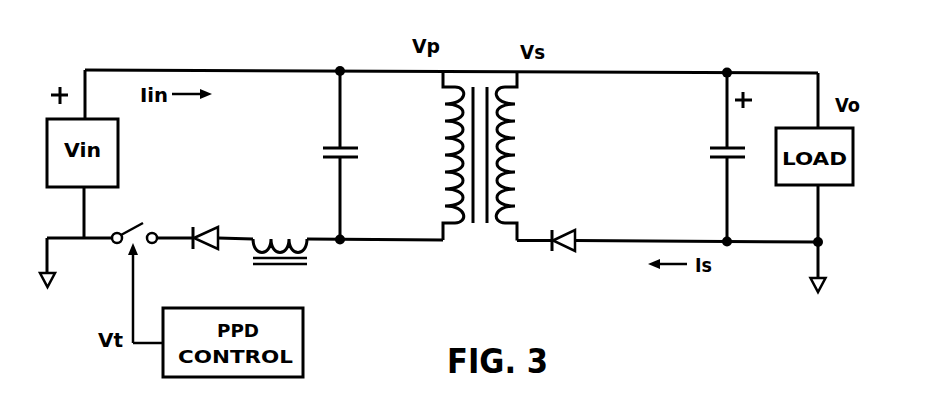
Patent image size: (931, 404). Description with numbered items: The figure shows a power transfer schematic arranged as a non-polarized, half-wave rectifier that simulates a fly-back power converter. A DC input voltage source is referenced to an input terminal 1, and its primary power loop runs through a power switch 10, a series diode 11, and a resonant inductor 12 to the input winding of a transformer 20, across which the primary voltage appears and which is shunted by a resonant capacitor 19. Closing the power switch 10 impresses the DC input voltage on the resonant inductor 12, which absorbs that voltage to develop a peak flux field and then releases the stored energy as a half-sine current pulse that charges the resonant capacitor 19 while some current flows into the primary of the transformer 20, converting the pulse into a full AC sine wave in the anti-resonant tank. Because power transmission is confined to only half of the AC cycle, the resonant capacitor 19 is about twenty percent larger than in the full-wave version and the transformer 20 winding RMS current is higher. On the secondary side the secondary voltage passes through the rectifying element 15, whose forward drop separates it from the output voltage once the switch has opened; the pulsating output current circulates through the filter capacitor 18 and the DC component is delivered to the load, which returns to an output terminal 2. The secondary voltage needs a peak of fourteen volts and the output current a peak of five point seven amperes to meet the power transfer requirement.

The input ground terminal 1 is at (57, 266).
The output ground terminal 2 is at (831, 269).
The power switch 10 is at (134, 270).
The input diode 11 is at (204, 223).
The resonant inductor 12 is at (280, 231).
The rectifying element 15 is at (563, 224).
The filter capacitor 18 is at (736, 157).
The resonant capacitor 19 is at (351, 155).
The transformer 20 is at (480, 172).